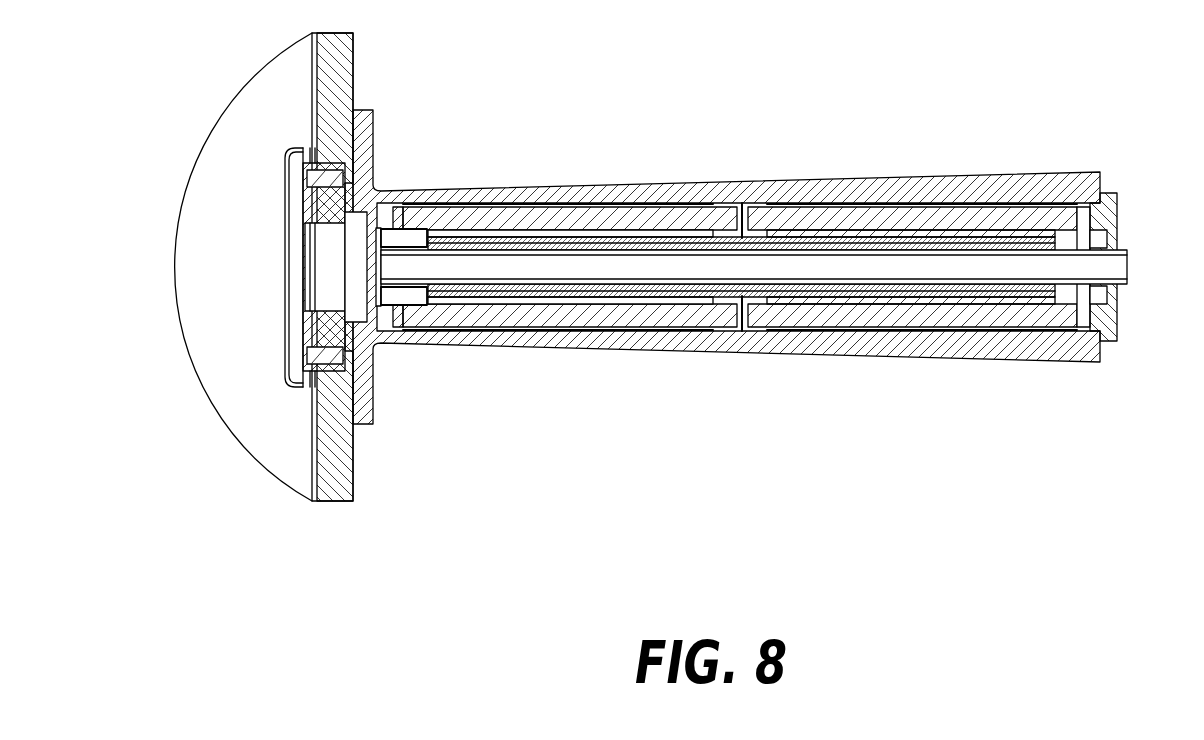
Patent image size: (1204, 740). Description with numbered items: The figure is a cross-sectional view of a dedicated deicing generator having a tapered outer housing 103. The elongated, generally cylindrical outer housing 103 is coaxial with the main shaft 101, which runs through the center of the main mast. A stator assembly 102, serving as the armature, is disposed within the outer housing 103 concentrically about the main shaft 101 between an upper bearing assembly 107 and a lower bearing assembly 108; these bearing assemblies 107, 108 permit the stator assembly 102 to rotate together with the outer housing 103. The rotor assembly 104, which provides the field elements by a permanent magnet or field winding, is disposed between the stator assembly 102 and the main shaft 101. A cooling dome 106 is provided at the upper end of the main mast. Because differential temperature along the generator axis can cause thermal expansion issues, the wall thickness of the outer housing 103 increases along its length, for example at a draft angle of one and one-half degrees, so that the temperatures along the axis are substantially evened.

The main shaft 101 is at (826, 265).
The stator assembly 102 is at (652, 220).
The outer housing 103 is at (752, 188).
The rotor assembly 104 is at (638, 288).
The cooling dome 106 is at (267, 150).
The upper bearing assembly 107 is at (393, 230).
The lower bearing assembly 108 is at (1097, 242).